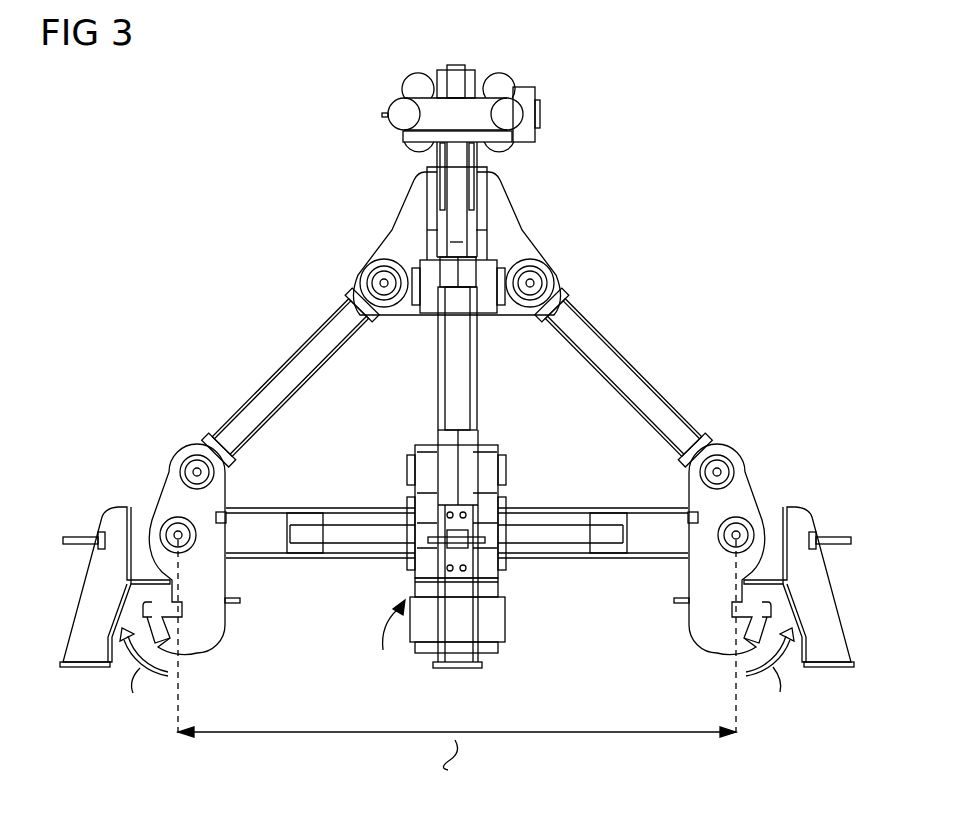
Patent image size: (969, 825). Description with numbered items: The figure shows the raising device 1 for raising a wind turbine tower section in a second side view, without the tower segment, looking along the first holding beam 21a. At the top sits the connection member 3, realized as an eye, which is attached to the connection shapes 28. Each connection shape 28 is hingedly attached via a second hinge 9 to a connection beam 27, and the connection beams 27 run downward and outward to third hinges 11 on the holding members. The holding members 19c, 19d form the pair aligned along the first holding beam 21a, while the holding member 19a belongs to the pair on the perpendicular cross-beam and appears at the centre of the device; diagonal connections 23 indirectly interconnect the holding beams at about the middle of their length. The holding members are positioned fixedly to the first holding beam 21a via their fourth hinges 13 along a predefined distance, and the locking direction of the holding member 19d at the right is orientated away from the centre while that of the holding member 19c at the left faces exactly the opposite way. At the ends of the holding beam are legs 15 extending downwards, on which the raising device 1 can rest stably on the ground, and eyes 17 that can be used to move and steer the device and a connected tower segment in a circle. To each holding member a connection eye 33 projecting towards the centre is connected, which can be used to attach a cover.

The raising device 1 is at (655, 152).
The connection member 3 is at (453, 110).
The second hinge 9 is at (378, 263).
The third hinge 11 is at (187, 463).
The fourth hinge 13 is at (180, 547).
The leg 15 is at (92, 610).
The eye 17 is at (75, 530).
The holding member 19a is at (493, 449).
The holding member 19c is at (170, 492).
The holding member 19d is at (744, 492).
The first holding beam 21a is at (640, 522).
The diagonal connection 23 is at (570, 535).
The connection beam 27 is at (254, 397).
The connection shape 28 is at (502, 213).
The connection eye 33 is at (237, 605).